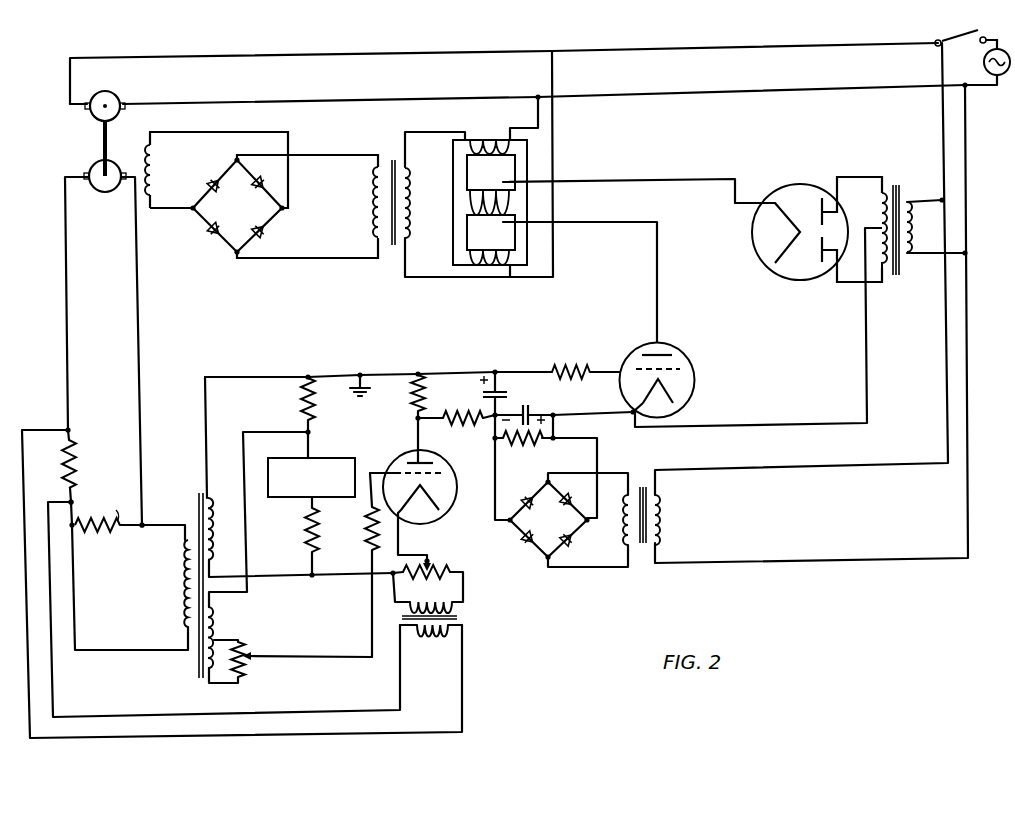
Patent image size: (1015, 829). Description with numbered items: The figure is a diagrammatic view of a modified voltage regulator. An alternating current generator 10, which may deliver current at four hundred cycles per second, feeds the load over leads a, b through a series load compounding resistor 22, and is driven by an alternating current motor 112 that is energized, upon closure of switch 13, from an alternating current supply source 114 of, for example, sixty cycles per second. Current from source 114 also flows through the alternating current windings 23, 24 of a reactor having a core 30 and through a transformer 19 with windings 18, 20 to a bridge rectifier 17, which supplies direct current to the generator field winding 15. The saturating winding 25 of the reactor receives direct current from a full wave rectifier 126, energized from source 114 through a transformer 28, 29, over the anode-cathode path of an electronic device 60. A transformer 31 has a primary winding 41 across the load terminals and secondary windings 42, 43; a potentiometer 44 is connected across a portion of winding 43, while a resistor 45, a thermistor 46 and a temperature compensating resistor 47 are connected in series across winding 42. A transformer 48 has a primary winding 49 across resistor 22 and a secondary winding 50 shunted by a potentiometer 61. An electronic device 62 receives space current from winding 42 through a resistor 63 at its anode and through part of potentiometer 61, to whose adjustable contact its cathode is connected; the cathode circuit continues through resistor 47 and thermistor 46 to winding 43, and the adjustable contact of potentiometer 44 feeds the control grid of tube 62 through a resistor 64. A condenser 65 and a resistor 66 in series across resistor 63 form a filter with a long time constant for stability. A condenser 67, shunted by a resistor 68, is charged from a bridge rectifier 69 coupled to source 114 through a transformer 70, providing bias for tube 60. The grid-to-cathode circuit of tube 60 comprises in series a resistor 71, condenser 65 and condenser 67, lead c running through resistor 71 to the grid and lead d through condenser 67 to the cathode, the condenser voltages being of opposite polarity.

The alternating current generator 10 is at (103, 190).
The alternating current motor 112 is at (113, 96).
The switch 13 is at (952, 46).
The alternating current supply source 114 is at (1000, 85).
The generator field winding 15 is at (157, 173).
The bridge rectifier 17 is at (285, 206).
The transformer winding 18 is at (372, 206).
The transformer 19 is at (388, 186).
The transformer winding 20 is at (412, 178).
The series load compounding resistor 22 is at (76, 463).
The alternating current winding 23 is at (491, 268).
The alternating current winding 24 is at (488, 141).
The saturating winding 25 is at (470, 205).
The transformer winding 28 is at (910, 258).
The transformer winding 29 is at (876, 200).
The reactor core 30 is at (504, 210).
The transformer 31 is at (198, 493).
The primary winding 41 is at (104, 527).
The secondary winding 42 is at (215, 500).
The secondary winding 43 is at (216, 618).
The potentiometer 44 is at (250, 662).
The resistor 45 is at (316, 400).
The thermistor 46 is at (332, 458).
The temperature compensating resistor 47 is at (320, 536).
The transformer 48 is at (451, 617).
The primary winding 49 is at (444, 634).
The secondary winding 50 is at (455, 603).
The electronic device 60 is at (691, 394).
The potentiometer 61 is at (437, 566).
The electronic device 62 is at (457, 477).
The resistor 63 is at (411, 400).
The resistor 64 is at (366, 545).
The condenser 65 is at (481, 393).
The resistor 66 is at (462, 423).
The condenser 67 is at (522, 404).
The resistor 68 is at (519, 444).
The bridge rectifier 69 is at (548, 519).
The transformer 70 is at (643, 486).
The resistor 71 is at (572, 366).
The full wave rectifier 126 is at (792, 190).
The lead a is at (76, 500).
The lead b is at (143, 520).
The lead c is at (530, 372).
The lead d is at (512, 414).